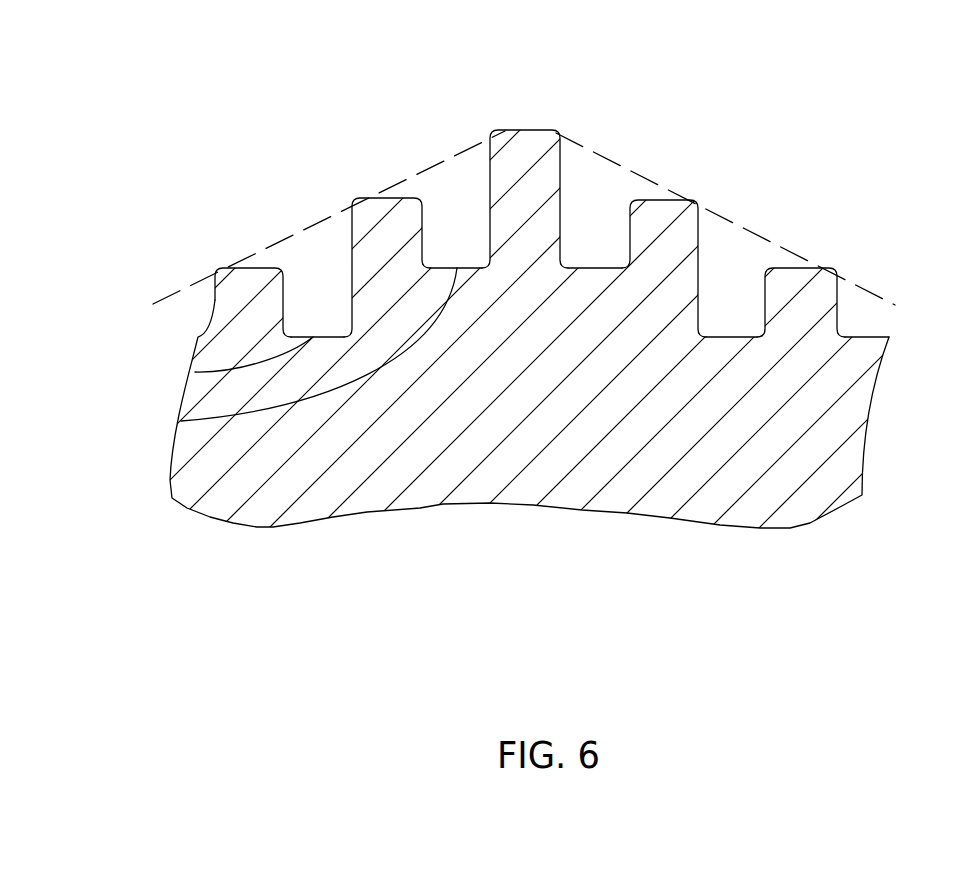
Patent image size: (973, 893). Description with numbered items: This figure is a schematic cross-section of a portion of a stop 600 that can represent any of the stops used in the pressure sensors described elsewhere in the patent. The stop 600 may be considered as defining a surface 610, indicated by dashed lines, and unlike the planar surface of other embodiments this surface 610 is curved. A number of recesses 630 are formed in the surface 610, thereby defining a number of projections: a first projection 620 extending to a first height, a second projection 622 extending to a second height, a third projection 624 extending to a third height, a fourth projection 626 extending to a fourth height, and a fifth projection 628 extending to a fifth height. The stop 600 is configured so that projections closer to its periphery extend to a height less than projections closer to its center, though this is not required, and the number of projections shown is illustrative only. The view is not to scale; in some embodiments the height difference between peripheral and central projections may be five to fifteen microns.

The stop 600 is at (268, 150).
The surface 610 is at (887, 297).
The first projection 620 is at (250, 280).
The second projection 622 is at (388, 208).
The third projection 624 is at (525, 142).
The fourth projection 626 is at (672, 212).
The fifth projection 628 is at (798, 278).
The recesses 630 is at (195, 372).